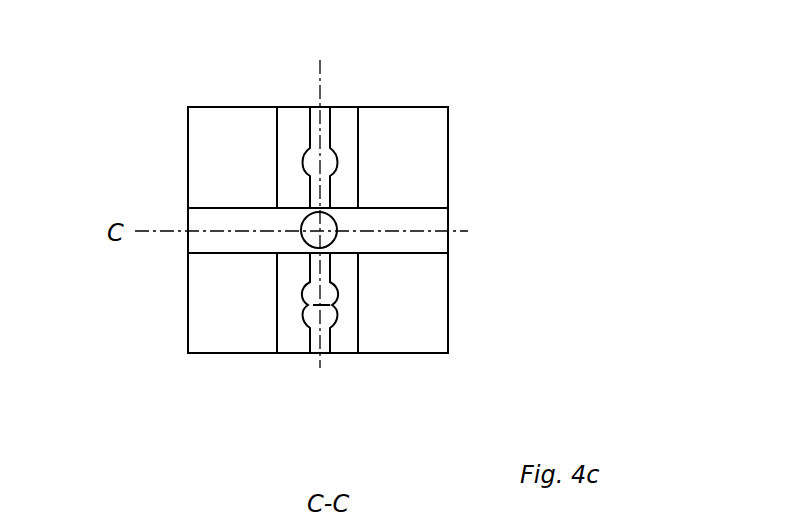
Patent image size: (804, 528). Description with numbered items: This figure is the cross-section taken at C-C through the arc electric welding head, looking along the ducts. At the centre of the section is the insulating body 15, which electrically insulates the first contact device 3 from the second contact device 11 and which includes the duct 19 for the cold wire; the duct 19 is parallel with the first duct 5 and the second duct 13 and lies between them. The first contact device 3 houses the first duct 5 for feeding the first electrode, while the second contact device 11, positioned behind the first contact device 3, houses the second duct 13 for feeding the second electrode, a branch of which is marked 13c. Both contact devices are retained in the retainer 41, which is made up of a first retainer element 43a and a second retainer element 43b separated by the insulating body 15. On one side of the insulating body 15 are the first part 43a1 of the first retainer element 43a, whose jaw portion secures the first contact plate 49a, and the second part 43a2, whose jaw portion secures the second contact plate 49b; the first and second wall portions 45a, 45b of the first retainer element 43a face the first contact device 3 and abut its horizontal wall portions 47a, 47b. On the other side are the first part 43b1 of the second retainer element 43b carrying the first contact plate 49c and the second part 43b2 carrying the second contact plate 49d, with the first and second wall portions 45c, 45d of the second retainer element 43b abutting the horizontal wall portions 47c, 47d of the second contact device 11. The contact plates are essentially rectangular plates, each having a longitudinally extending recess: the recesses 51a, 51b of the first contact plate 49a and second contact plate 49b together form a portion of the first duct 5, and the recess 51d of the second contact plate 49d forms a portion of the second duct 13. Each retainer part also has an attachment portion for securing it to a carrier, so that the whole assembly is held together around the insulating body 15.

The first contact device 3 is at (298, 340).
The first duct 5 is at (325, 323).
The second contact device 11 is at (377, 111).
The second duct 13 is at (320, 166).
The outlet passage branch 13c is at (308, 128).
The insulating body 15 is at (438, 223).
The duct for the cold wire 19 is at (332, 216).
The retainer 41 is at (128, 407).
The first retainer element 43a is at (194, 330).
The first part of the first retainer element 43a1 is at (212, 338).
The second part of the first retainer element 43a2 is at (432, 305).
The second retainer element 43b is at (443, 176).
The first part of the second retainer element 43b1 is at (197, 152).
The second part of the second retainer element 43b2 is at (450, 105).
The first wall portion of the first retainer element 45a is at (270, 300).
The second wall portion of the first retainer element 45b is at (356, 292).
The first wall portion of the second retainer element 45c is at (263, 178).
The second wall portion of the second retainer element 45d is at (358, 158).
The horizontal wall portion of the first contact device 47a is at (278, 313).
The horizontal wall portion of the first contact device 47b is at (357, 300).
The horizontal wall portion of the second contact device 47c is at (282, 168).
The horizontal wall portion of the second contact device 47d is at (338, 120).
The first contact plate 49a is at (277, 273).
The second contact plate 49b is at (347, 272).
The first contact plate 49c is at (284, 134).
The second contact plate 49d is at (353, 131).
The longitudinally extending recess 51a is at (323, 322).
The longitudinally extending recess 51b is at (335, 310).
The longitudinally extending recess 51d is at (357, 177).